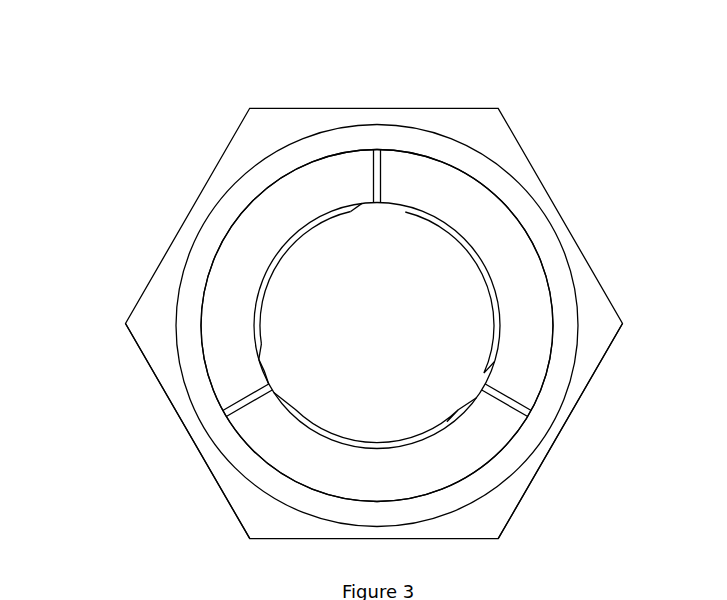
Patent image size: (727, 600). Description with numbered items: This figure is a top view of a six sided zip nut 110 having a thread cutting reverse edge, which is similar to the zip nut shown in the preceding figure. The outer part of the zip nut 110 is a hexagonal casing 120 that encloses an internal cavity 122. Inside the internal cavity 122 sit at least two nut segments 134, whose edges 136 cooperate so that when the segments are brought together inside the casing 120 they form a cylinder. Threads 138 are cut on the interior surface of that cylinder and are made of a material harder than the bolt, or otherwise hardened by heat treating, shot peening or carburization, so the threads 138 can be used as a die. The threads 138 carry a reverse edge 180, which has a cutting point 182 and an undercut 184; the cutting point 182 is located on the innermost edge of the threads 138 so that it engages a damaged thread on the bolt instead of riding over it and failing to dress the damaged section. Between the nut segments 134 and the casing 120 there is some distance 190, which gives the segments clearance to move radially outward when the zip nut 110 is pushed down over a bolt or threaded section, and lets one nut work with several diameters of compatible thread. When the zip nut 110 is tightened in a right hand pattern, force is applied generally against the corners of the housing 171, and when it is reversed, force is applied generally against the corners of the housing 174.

The zip nut 110 is at (460, 83).
The casing 120 is at (597, 339).
The internal cavity 122 is at (563, 311).
The nut segments 134 is at (285, 220).
The edges 136 is at (373, 171).
The threads 138 is at (490, 290).
The corners of the housing 171 is at (512, 523).
The corners of the housing 174 is at (233, 520).
The reverse edge 180 is at (250, 348).
The cutting point 182 is at (267, 357).
The undercut 184 is at (255, 342).
The distance 190 is at (213, 253).